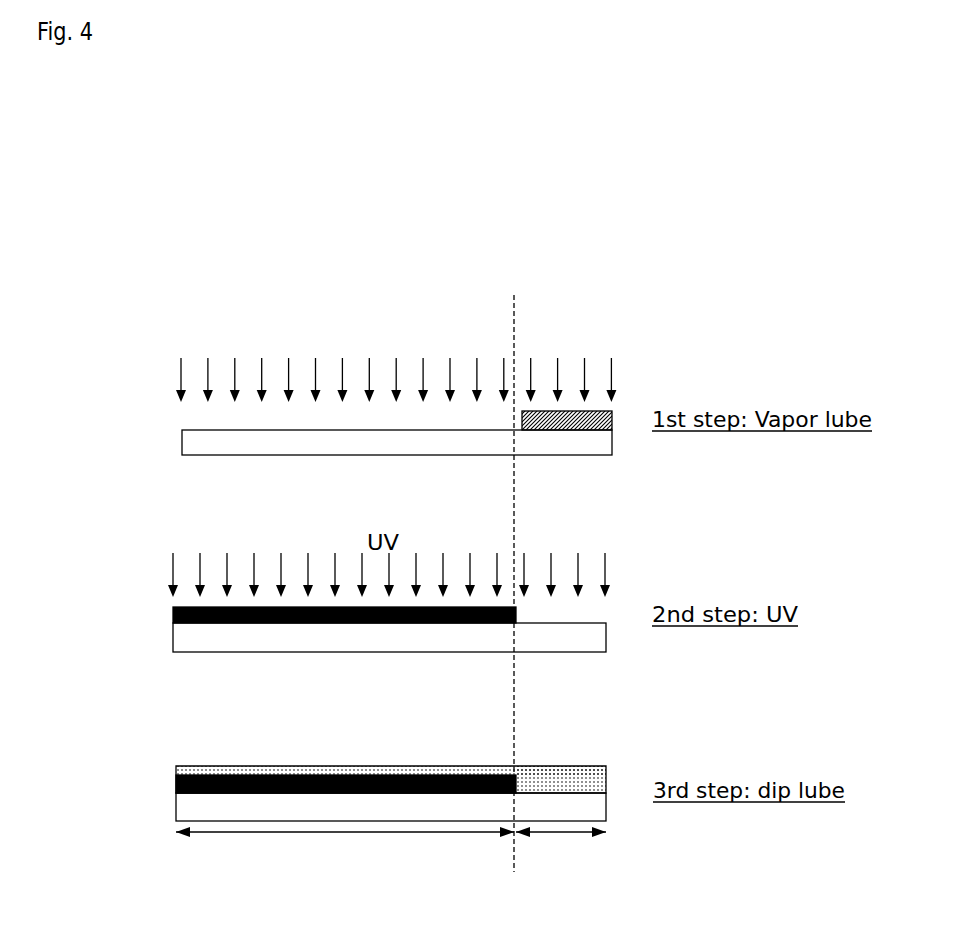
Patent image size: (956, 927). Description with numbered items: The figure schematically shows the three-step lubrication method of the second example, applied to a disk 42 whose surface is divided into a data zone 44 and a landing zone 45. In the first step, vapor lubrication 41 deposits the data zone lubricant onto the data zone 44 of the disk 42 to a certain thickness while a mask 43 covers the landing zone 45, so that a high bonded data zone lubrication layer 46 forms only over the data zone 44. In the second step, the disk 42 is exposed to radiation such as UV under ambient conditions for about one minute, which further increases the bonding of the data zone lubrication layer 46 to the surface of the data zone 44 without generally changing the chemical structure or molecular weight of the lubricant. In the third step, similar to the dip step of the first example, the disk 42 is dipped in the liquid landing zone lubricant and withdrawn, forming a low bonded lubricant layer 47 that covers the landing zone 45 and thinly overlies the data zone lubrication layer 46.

The vapor lubrication 41 is at (396, 364).
The disk 42 is at (181, 436).
The mask 43 is at (580, 425).
The data zone 44 is at (343, 845).
The landing zone 45 is at (567, 845).
The data zone lubrication layer 46 is at (173, 608).
The low bonded lube 47 is at (625, 712).